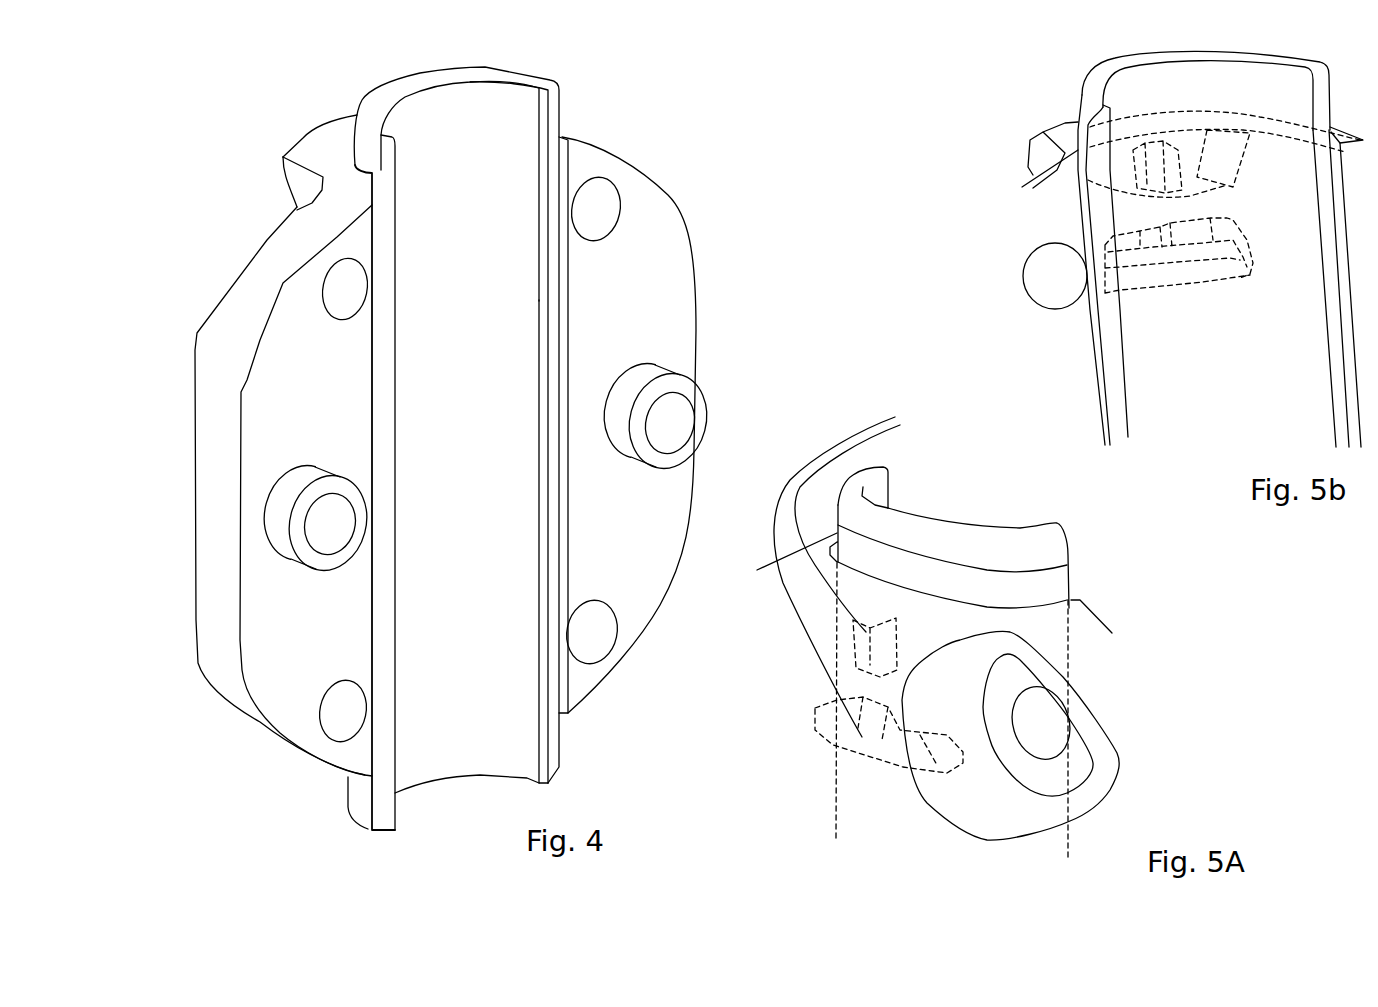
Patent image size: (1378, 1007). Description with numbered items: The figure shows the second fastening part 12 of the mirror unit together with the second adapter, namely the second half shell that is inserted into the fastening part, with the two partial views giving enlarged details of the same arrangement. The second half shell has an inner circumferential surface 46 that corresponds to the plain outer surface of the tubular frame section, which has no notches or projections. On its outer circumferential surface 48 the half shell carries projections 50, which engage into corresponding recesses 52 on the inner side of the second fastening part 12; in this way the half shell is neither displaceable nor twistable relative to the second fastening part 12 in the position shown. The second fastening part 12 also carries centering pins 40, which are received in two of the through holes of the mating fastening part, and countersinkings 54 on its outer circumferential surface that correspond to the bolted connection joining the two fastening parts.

In FIG. 4, the second fastening part 12 is at (491, 448).
In FIG. 4, the centering pins 40 is at (696, 443).
In FIG. 4, the inner circumferential surface 46 is at (504, 634).
In FIG. 5A, the outer circumferential surface 48 is at (983, 588).
In FIG. 5A, the projections 50 is at (848, 571).
In FIG. 5B, the recesses 52 is at (1205, 232).
In FIG. 5A, the countersinkings 54 is at (1078, 762).